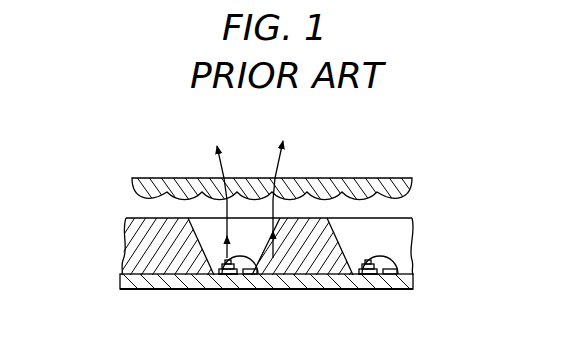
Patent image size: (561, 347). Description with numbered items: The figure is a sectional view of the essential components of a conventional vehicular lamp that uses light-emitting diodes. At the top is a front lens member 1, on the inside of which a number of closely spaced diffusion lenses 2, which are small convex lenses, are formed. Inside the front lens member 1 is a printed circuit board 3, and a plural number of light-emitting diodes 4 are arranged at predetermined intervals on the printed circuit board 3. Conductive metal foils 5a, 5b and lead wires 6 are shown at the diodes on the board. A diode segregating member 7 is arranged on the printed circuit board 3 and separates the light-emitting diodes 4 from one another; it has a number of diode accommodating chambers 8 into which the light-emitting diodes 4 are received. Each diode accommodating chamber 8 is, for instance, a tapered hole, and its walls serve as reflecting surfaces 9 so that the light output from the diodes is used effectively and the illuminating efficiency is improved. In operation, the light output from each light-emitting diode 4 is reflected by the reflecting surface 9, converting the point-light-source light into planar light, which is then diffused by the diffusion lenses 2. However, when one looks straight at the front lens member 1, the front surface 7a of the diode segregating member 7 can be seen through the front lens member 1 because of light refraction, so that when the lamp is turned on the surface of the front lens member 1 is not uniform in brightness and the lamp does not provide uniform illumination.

The front lens member 1 is at (286, 212).
The diffusion lenses 2 is at (408, 197).
The printed circuit board 3 is at (413, 280).
The light-emitting diodes 4 is at (224, 276).
The conductive metal foil 5a is at (238, 278).
The conductive metal foil 5b is at (251, 276).
The lead wires 6 is at (246, 259).
The diode segregating member 7 is at (247, 228).
The front surface 7a is at (309, 218).
The diode accommodating chambers 8 is at (188, 290).
The reflecting surfaces 9 is at (298, 204).